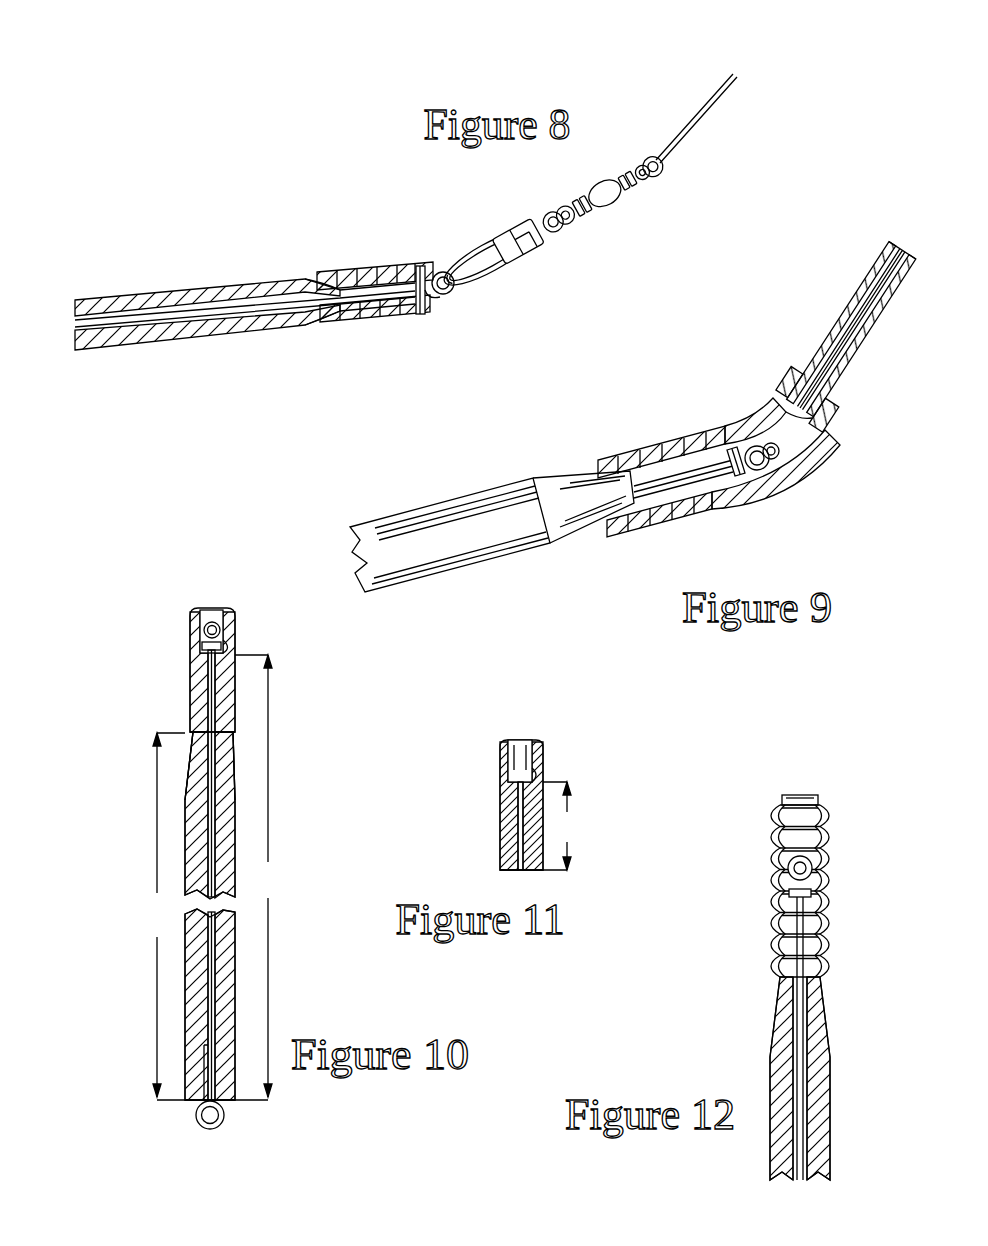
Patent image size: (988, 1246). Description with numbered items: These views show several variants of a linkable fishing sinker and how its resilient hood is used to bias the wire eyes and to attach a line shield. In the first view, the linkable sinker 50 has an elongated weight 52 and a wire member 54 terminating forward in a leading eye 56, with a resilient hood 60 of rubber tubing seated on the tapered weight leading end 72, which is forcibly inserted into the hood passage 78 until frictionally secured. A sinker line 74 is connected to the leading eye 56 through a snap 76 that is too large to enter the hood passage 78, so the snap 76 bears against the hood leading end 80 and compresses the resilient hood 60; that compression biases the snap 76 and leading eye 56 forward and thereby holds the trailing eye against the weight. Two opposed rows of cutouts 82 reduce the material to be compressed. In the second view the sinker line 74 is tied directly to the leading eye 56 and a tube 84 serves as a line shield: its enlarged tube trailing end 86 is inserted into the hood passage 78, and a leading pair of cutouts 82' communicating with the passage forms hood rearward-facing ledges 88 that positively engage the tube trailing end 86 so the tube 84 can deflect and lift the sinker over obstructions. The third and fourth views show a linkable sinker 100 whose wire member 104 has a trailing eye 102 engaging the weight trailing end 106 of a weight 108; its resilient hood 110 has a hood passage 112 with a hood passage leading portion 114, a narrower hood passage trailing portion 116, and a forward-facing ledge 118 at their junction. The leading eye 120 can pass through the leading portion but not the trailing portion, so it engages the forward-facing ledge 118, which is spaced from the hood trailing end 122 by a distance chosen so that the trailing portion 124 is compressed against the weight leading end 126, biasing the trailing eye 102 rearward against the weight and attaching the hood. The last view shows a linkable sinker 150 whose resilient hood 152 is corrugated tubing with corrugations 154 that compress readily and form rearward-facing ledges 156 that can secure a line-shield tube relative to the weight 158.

In FIG. 8, the linkable sinker 50 is at (265, 200).
In FIG. 9, the linkable sinker 50 is at (520, 445).
In FIG. 8, the elongated weight 52 is at (148, 288).
In FIG. 9, the elongated weight 52 is at (420, 506).
In FIG. 8, the wire member 54 is at (276, 293).
In FIG. 9, the wire member 54 is at (680, 470).
In FIG. 8, the leading eye 56 is at (443, 295).
In FIG. 9, the leading eye 56 is at (757, 473).
In FIG. 8, the resilient hood 60 is at (355, 266).
In FIG. 9, the resilient hood 60 is at (620, 456).
In FIG. 8, the weight leading end 72 is at (298, 320).
In FIG. 9, the weight leading end 72 is at (567, 523).
In FIG. 8, the sinker line 74 is at (675, 140).
In FIG. 9, the sinker line 74 is at (767, 470).
In FIG. 8, the snap 76 is at (545, 252).
In FIG. 8, the hood passage 78 is at (397, 282).
In FIG. 9, the hood passage 78 is at (698, 483).
In FIG. 8, the hood leading end 80 is at (432, 262).
In FIG. 8, the cutouts 82 is at (375, 317).
In FIG. 9, the cutouts 82 is at (661, 491).
In FIG. 9, the leading pair of cutouts 82' is at (769, 453).
In FIG. 9, the tube 84 is at (828, 338).
In FIG. 9, the tube trailing end 86 is at (775, 400).
In FIG. 9, the hood rearward-facing ledges 88 is at (770, 402).
In FIG. 10, the linkable sinker 100 is at (298, 702).
In FIG. 10, the trailing eye 102 is at (197, 1127).
In FIG. 10, the wire member 104 is at (203, 815).
In FIG. 10, the weight trailing end 106 is at (240, 1098).
In FIG. 10, the weight 108 is at (185, 1000).
In FIG. 10, the resilient hood 110 is at (178, 606).
In FIG. 11, the resilient hood 110 is at (560, 748).
In FIG. 10, the hood passage 112 is at (200, 612).
In FIG. 11, the hood passage 112 is at (522, 742).
In FIG. 10, the hood passage leading portion 114 is at (200, 618).
In FIG. 11, the hood passage leading portion 114 is at (520, 760).
In FIG. 10, the hood passage trailing portion 116 is at (217, 703).
In FIG. 11, the hood passage trailing portion 116 is at (522, 813).
In FIG. 10, the forward-facing ledge 118 is at (223, 648).
In FIG. 11, the forward-facing ledge 118 is at (535, 775).
In FIG. 10, the leading eye 120 is at (212, 622).
In FIG. 10, the hood trailing end 122 is at (195, 730).
In FIG. 11, the hood trailing end 122 is at (505, 865).
In FIG. 10, the trailing portion 124 is at (193, 690).
In FIG. 11, the trailing portion 124 is at (505, 843).
In FIG. 10, the weight leading end 126 is at (223, 750).
In FIG. 12, the linkable sinker 150 is at (725, 983).
In FIG. 12, the resilient hood 152 is at (760, 923).
In FIG. 12, the corrugations 154 is at (782, 890).
In FIG. 12, the rearward-facing ledges 156 is at (775, 810).
In FIG. 12, the weight 158 is at (775, 1055).